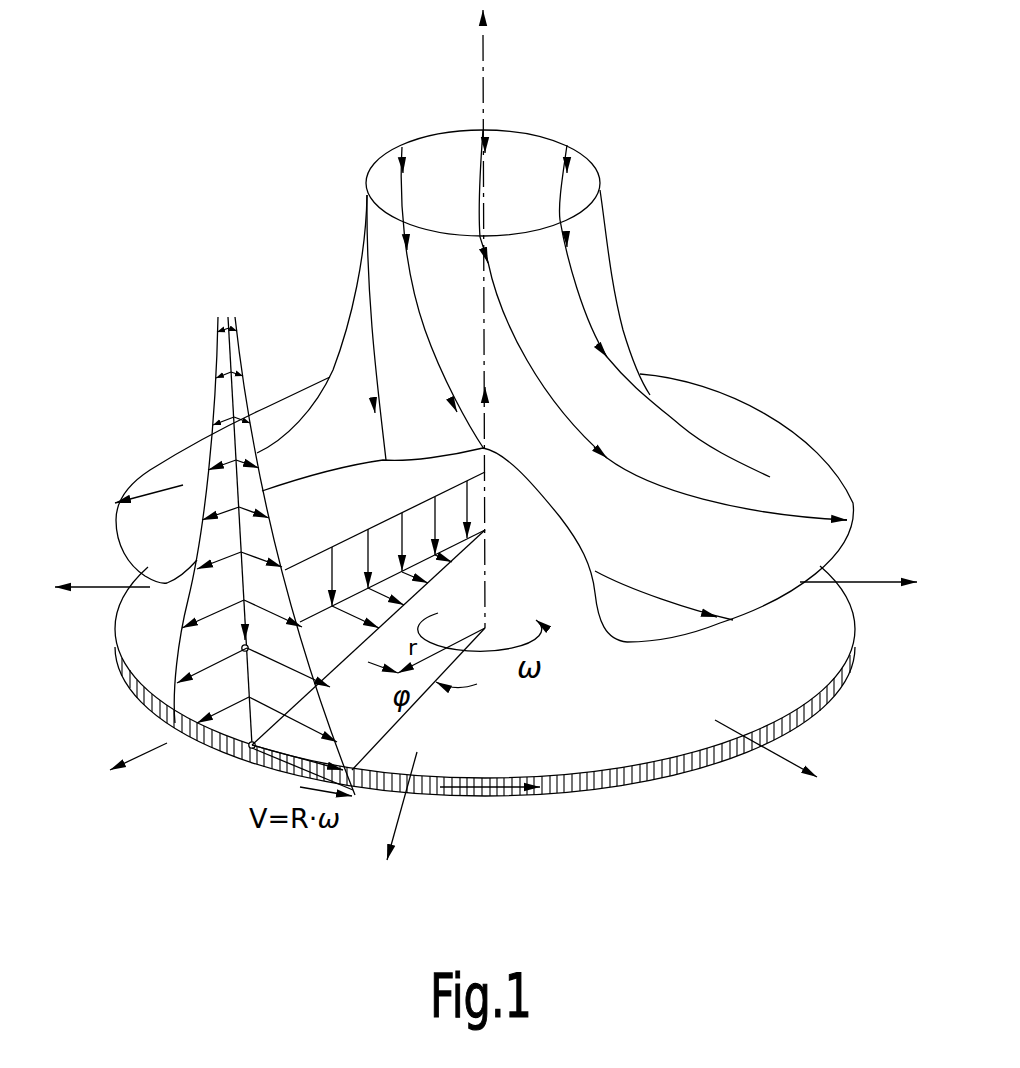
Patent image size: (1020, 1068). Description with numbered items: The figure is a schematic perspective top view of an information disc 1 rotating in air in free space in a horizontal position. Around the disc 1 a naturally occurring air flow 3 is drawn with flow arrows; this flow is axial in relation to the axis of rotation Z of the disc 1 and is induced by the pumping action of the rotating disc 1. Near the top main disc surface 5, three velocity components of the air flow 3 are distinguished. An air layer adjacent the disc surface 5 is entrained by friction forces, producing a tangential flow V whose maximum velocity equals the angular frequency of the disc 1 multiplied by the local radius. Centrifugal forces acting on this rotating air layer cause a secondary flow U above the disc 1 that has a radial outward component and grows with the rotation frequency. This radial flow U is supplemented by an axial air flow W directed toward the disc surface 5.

The disc 1 is at (833, 691).
The air flow 3 is at (600, 238).
The disc surface 5 is at (680, 738).
The axis of rotation Z is at (483, 75).
The secondary flow U is at (172, 652).
The axial air flow W is at (358, 536).
The tangential flow V is at (340, 737).
The disk radius R is at (356, 772).